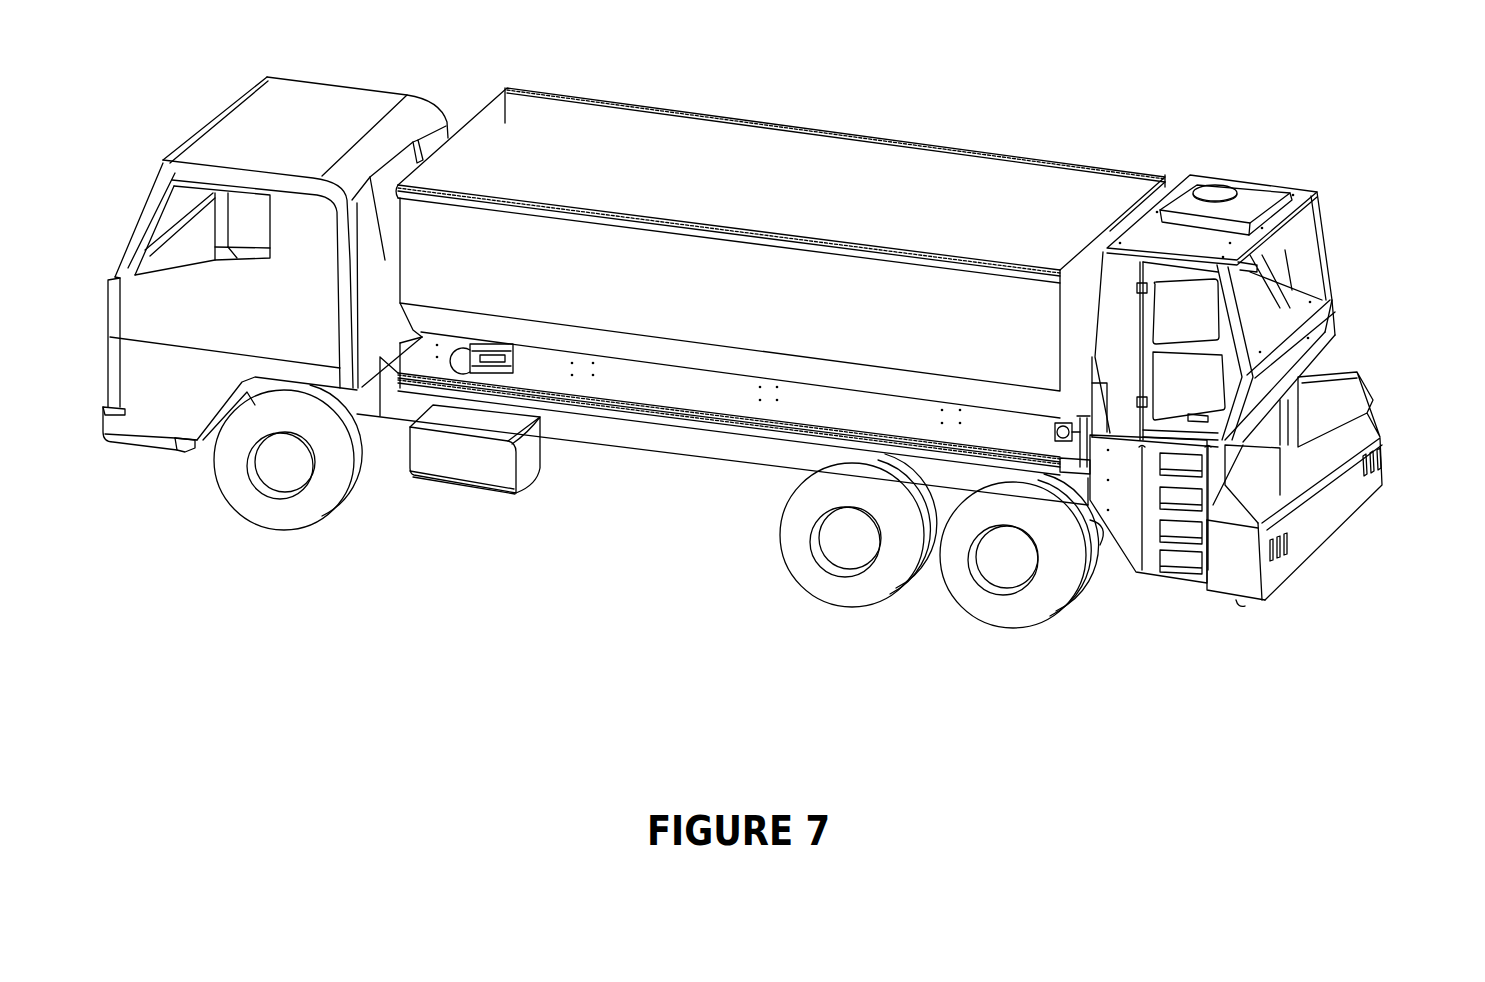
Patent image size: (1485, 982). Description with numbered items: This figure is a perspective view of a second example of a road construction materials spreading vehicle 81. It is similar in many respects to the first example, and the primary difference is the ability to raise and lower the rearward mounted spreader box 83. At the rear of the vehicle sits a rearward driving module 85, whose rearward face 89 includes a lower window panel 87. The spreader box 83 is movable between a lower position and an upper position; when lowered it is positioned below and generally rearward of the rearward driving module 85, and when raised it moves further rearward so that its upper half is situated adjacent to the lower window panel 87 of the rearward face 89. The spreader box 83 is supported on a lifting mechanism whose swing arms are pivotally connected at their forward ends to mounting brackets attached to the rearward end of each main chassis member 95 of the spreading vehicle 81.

The road construction materials spreading vehicle 81 is at (515, 543).
The spreader box 83 is at (1247, 593).
The rearward driving module 85 is at (1290, 185).
The lower window panel 87 is at (1322, 340).
The rearward face 89 is at (1335, 262).
The main chassis member 95 is at (750, 467).